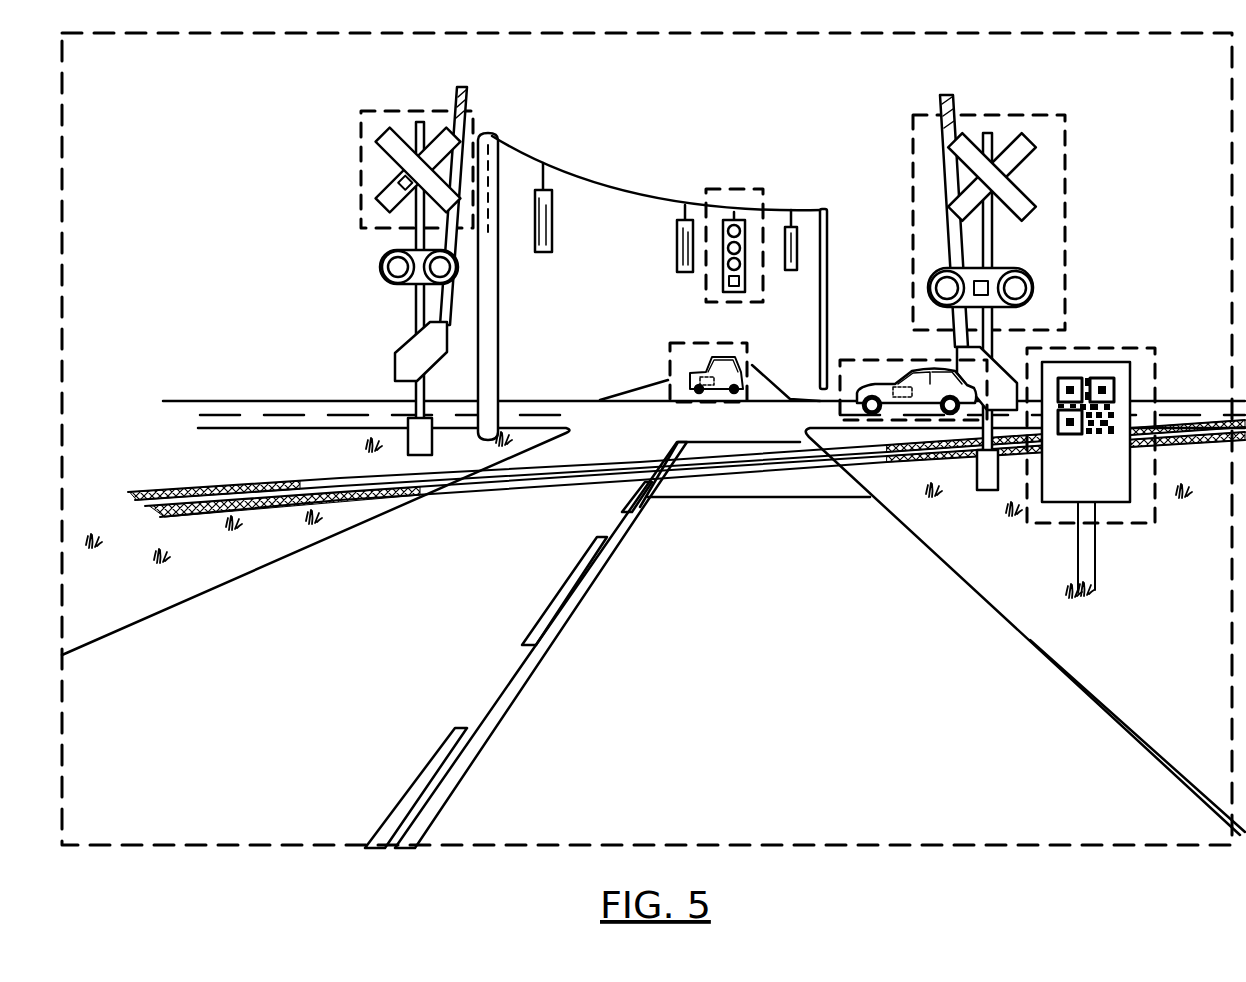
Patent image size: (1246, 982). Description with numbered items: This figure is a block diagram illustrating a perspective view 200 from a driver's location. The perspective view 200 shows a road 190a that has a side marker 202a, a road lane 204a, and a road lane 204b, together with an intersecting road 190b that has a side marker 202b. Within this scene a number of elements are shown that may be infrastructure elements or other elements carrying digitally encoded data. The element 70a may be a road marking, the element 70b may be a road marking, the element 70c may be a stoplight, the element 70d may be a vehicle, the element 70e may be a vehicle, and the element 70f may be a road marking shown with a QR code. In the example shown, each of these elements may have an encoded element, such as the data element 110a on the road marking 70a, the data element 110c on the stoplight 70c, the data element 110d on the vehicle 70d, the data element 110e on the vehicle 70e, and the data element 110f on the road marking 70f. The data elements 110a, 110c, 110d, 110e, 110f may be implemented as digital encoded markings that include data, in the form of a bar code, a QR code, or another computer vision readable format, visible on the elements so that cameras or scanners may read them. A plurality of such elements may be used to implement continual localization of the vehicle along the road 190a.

The perspective view 200 is at (278, 33).
The road marking 70a is at (1018, 290).
The road marking 70b is at (381, 271).
The stoplight 70c is at (688, 230).
The vehicle 70d is at (892, 357).
The vehicle 70e is at (664, 359).
The road marking 70f is at (1108, 443).
The data element 110a is at (993, 268).
The data element 110c is at (730, 284).
The data element 110d is at (908, 372).
The data element 110e is at (696, 382).
The data element 110f is at (1100, 378).
The road 190a is at (1160, 782).
The intersecting road 190b is at (203, 412).
The side marker 202a is at (1095, 696).
The side marker 202b is at (350, 400).
The road lane 204a is at (316, 580).
The road lane 204b is at (617, 606).